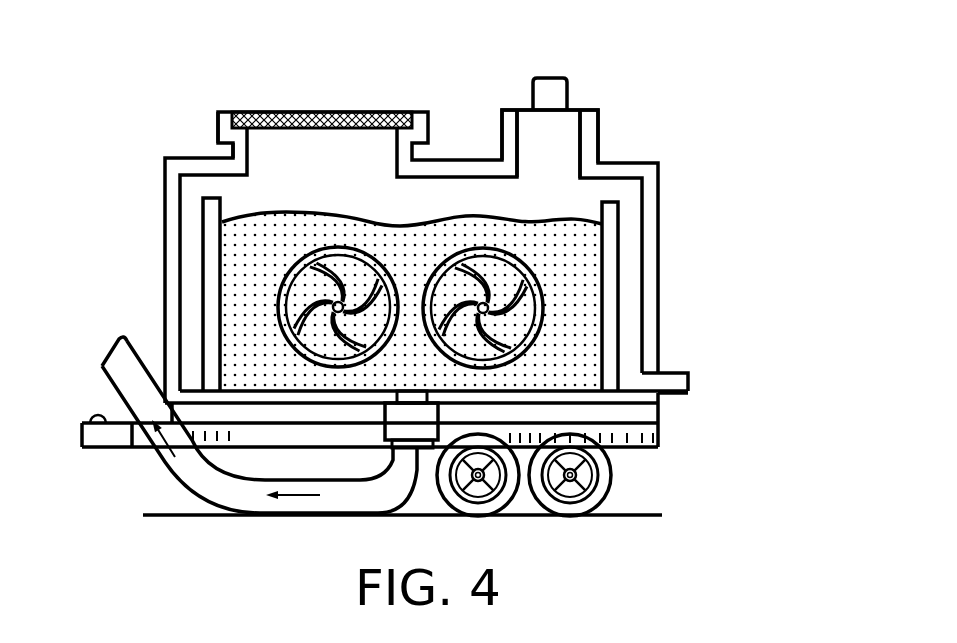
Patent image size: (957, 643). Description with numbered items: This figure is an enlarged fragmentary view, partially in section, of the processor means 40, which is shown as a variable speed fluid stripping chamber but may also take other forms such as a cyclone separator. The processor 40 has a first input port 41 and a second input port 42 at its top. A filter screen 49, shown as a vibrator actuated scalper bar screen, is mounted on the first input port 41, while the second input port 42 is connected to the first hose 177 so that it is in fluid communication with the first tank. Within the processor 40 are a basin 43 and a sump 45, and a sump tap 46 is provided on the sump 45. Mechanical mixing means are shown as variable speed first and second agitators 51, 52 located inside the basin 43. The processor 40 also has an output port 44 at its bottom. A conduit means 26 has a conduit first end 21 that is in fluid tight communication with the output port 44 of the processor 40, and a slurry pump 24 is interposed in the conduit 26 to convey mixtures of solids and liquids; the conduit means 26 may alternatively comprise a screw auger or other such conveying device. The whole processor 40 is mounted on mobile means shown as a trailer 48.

The processor means 40 is at (716, 135).
The first input port 41 is at (293, 155).
The second input port 42 is at (545, 143).
The basin 43 is at (592, 390).
The output port 44 is at (525, 450).
The sump 45 is at (630, 320).
The sump tap 46 is at (690, 387).
The trailer 48 is at (663, 423).
The filter screen 49 is at (292, 111).
The first agitator 51 is at (280, 287).
The second agitator 52 is at (525, 281).
The first hose 177 is at (555, 90).
The conduit first end 21 is at (385, 400).
The slurry pump 24 is at (404, 425).
The conduit means 26 is at (168, 468).